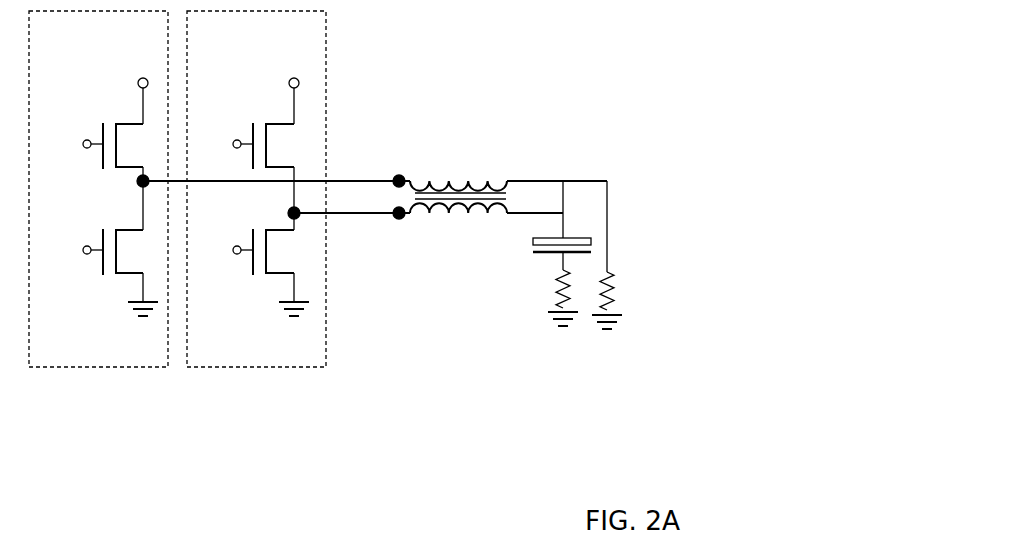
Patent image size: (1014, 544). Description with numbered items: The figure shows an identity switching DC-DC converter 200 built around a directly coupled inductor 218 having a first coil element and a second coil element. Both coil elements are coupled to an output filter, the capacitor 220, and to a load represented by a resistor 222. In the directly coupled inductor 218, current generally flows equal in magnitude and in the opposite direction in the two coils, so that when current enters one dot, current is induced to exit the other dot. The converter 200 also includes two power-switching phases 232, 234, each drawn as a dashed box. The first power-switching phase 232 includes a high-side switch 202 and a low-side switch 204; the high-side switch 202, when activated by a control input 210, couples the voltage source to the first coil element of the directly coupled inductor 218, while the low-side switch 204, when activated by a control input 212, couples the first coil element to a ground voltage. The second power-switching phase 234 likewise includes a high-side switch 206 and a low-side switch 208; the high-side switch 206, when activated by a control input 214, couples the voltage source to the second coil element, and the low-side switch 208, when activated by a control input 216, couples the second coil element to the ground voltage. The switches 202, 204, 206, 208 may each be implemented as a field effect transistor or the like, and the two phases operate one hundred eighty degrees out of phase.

The identity switching DC-DC converter 200 is at (408, 431).
The high-side switch 202 is at (122, 110).
The low-side switch 204 is at (122, 214).
The high-side switch 206 is at (275, 110).
The low-side switch 208 is at (275, 215).
The control input 210 is at (72, 156).
The control input 212 is at (72, 261).
The control input 214 is at (222, 156).
The control input 216 is at (222, 261).
The directly coupled inductor 218 is at (458, 165).
The capacitor 220 is at (522, 245).
The resistor 222 is at (629, 284).
The first power-switching phase 232 is at (113, 37).
The second power-switching phase 234 is at (270, 37).